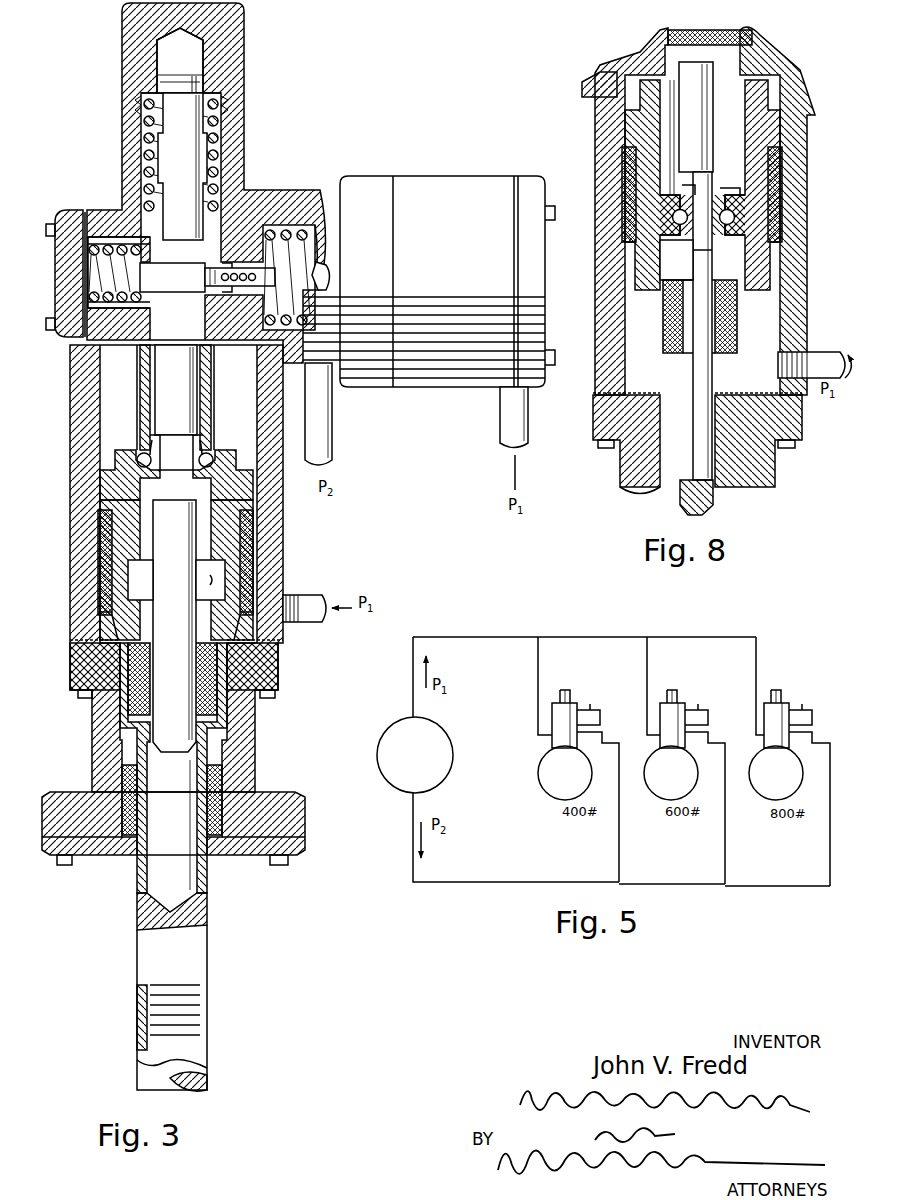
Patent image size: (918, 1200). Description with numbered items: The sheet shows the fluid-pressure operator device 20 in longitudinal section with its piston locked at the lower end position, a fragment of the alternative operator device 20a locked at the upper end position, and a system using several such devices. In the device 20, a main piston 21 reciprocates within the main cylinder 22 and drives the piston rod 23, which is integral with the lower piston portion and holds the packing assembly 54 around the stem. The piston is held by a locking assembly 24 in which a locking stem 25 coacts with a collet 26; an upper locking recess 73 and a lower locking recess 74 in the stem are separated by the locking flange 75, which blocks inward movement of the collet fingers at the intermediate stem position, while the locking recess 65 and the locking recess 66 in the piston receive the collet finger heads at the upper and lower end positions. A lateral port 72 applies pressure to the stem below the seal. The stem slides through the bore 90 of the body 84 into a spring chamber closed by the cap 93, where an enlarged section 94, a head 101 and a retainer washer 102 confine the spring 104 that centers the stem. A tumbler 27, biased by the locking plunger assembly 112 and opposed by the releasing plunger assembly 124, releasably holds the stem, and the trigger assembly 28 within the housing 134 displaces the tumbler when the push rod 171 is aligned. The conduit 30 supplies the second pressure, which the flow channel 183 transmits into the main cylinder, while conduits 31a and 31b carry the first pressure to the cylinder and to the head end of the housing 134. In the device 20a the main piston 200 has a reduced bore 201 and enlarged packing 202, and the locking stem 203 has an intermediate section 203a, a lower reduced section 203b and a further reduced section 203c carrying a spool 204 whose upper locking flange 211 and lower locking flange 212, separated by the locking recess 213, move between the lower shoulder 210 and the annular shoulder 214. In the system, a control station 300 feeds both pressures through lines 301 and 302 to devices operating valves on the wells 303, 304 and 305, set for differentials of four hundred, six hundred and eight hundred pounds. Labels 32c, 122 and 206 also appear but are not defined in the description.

In FIG. 3, the operator device 20 is at (306, 68).
In FIG. 5, the operator device 20 is at (582, 697).
In FIG. 8, the alternative operator device 20a is at (590, 70).
In FIG. 3, the main piston 21 is at (126, 532).
In FIG. 3, the main cylinder 22 is at (72, 458).
In FIG. 8, the main cylinder 22 is at (596, 214).
In FIG. 3, the piston rod 23 is at (137, 914).
In FIG. 3, the locking assembly 24 is at (138, 390).
In FIG. 3, the locking stem 25 is at (174, 695).
In FIG. 3, the collet 26 is at (146, 408).
In FIG. 8, the collet 26 is at (680, 135).
In FIG. 3, the tumbler 27 is at (207, 277).
In FIG. 3, the trigger assembly 28 is at (320, 238).
In FIG. 3, the conduit 30 is at (324, 410).
In FIG. 3, the conduit 31a is at (312, 584).
In FIG. 3, the conduit 31b is at (528, 436).
In FIG. 3, the packing ring 32c is at (100, 632).
In FIG. 3, the packing assembly 54 is at (242, 668).
In FIG. 3, the internal annular locking recess 65 is at (218, 578).
In FIG. 3, the internal annular locking recess 66 is at (216, 448).
In FIG. 3, the lateral port 72 is at (210, 730).
In FIG. 8, the lateral port 72 is at (748, 372).
In FIG. 3, the upper annular locking recess 73 is at (196, 437).
In FIG. 3, the lower annular locking recess 74 is at (200, 488).
In FIG. 3, the locking flange 75 is at (176, 390).
In FIG. 3, the body 84 is at (118, 180).
In FIG. 3, the bore 90 is at (232, 255).
In FIG. 3, the cap 93 is at (128, 18).
In FIG. 3, the enlarged section 94 is at (163, 152).
In FIG. 3, the head 101 is at (160, 78).
In FIG. 3, the retainer washer 102 is at (148, 92).
In FIG. 3, the spring 104 is at (146, 120).
In FIG. 3, the locking plunger assembly 112 is at (86, 227).
In FIG. 3, the left spring 122 is at (142, 238).
In FIG. 3, the releasing plunger assembly 124 is at (288, 235).
In FIG. 3, the housing 134 is at (446, 178).
In FIG. 3, the push rod 171 is at (322, 268).
In FIG. 3, the flow channel 183 is at (258, 350).
In FIG. 8, the main piston 200 is at (720, 270).
In FIG. 8, the bore 201 is at (737, 292).
In FIG. 8, the packing 202 is at (737, 312).
In FIG. 8, the locking stem 203 is at (686, 148).
In FIG. 8, the intermediate section 203a is at (697, 118).
In FIG. 8, the lower reduced section 203b is at (716, 502).
In FIG. 8, the further reduced section 203c is at (714, 252).
In FIG. 8, the spool 204 is at (750, 204).
In FIG. 8, the seat member 206 is at (690, 185).
In FIG. 8, the lower shoulder 210 is at (690, 266).
In FIG. 8, the upper annular locking flange 211 is at (757, 186).
In FIG. 8, the lower annular locking flange 212 is at (748, 216).
In FIG. 8, the annular locking recess 213 is at (697, 205).
In FIG. 8, the annular shoulder 214 is at (625, 240).
In FIG. 5, the control station 300 is at (415, 755).
In FIG. 5, the conduit 301 is at (488, 634).
In FIG. 5, the conduit 302 is at (505, 882).
In FIG. 5, the well 303 is at (578, 759).
In FIG. 5, the well 304 is at (684, 760).
In FIG. 5, the well 305 is at (789, 761).